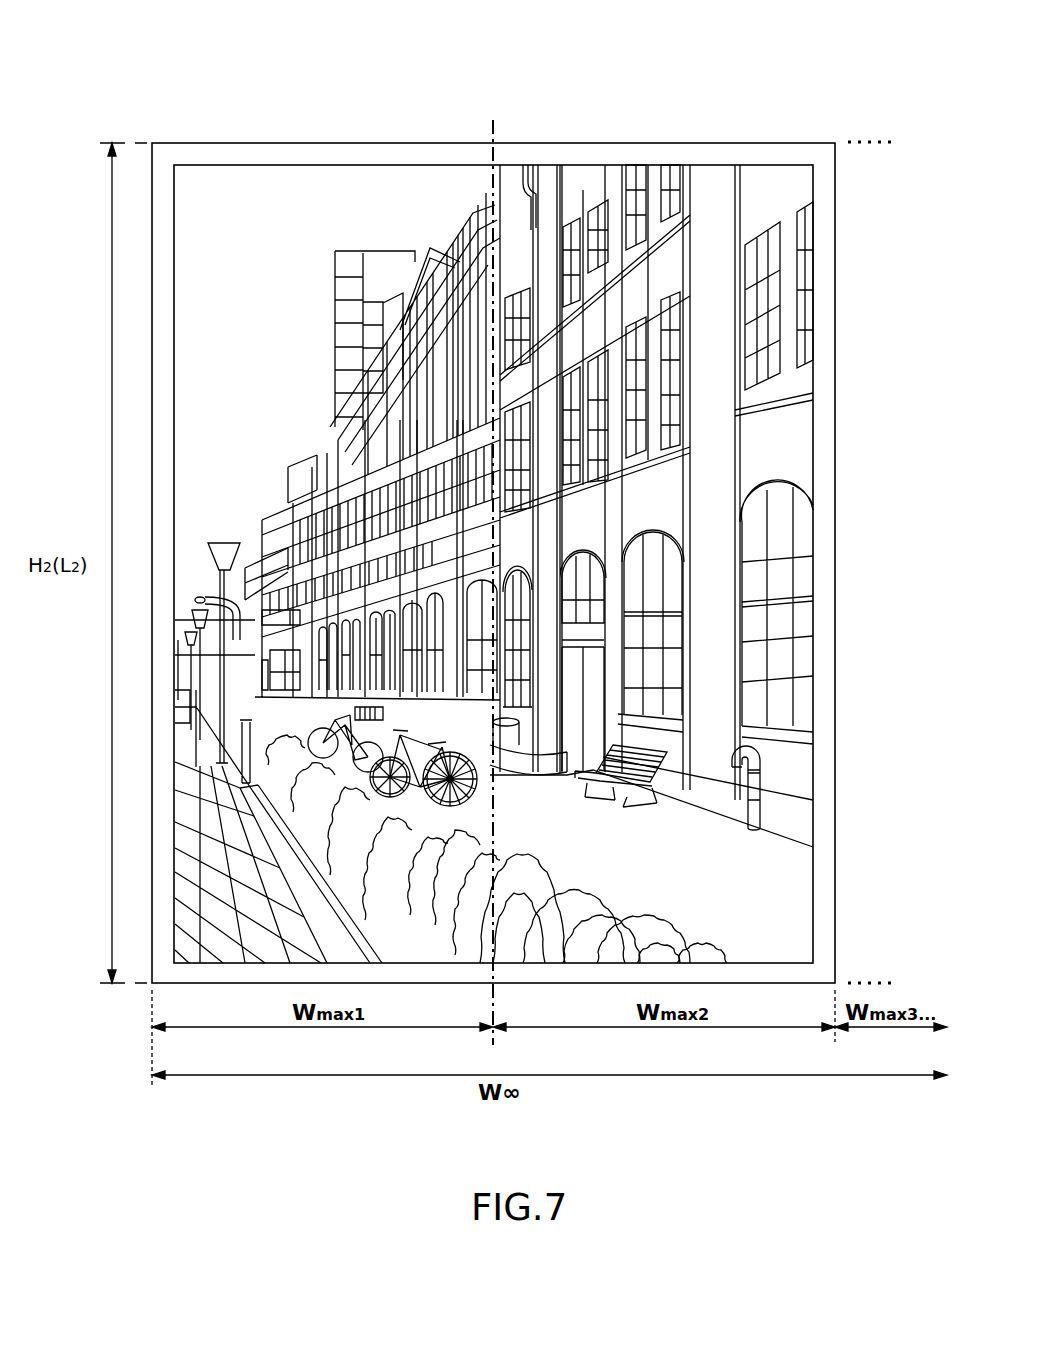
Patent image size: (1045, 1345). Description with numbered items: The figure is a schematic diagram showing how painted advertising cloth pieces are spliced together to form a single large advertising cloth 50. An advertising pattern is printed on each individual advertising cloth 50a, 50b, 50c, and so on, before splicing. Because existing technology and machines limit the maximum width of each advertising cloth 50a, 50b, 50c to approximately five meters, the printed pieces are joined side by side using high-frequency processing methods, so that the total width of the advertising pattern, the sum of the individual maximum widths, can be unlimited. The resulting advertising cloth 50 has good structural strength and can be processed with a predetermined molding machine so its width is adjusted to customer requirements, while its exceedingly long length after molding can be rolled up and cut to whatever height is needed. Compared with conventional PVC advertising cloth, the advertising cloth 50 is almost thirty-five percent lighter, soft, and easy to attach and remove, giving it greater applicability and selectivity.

The advertising cloth 50 is at (172, 25).
The advertising cloth 50a is at (490, 110).
The advertising cloth 50b is at (832, 110).
The advertising cloth 50c is at (849, 80).